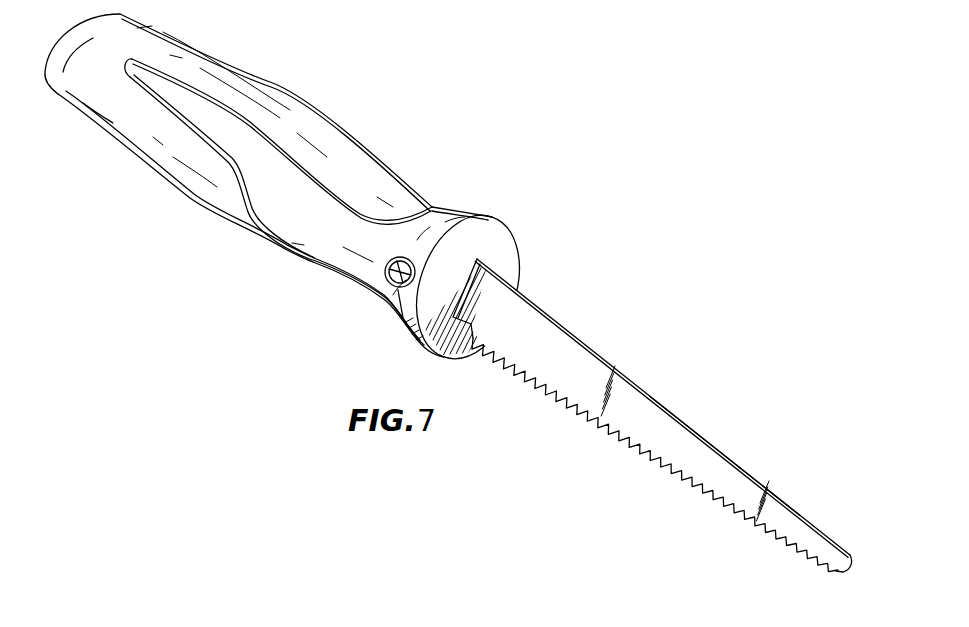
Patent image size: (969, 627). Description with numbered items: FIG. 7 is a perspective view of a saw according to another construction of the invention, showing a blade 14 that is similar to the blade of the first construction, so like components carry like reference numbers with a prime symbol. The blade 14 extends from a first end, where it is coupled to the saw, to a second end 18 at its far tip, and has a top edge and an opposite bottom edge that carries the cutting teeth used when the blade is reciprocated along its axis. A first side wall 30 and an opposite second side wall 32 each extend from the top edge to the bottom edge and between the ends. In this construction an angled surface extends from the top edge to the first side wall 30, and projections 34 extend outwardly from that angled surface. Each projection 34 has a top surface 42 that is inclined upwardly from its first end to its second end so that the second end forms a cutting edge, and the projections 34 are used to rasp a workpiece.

The saw blade 14 is at (676, 386).
The second end 18 is at (853, 561).
The first side wall 30 is at (741, 467).
The second side wall 32 is at (687, 452).
The projections 34 is at (586, 347).
The top surface 42 is at (695, 430).